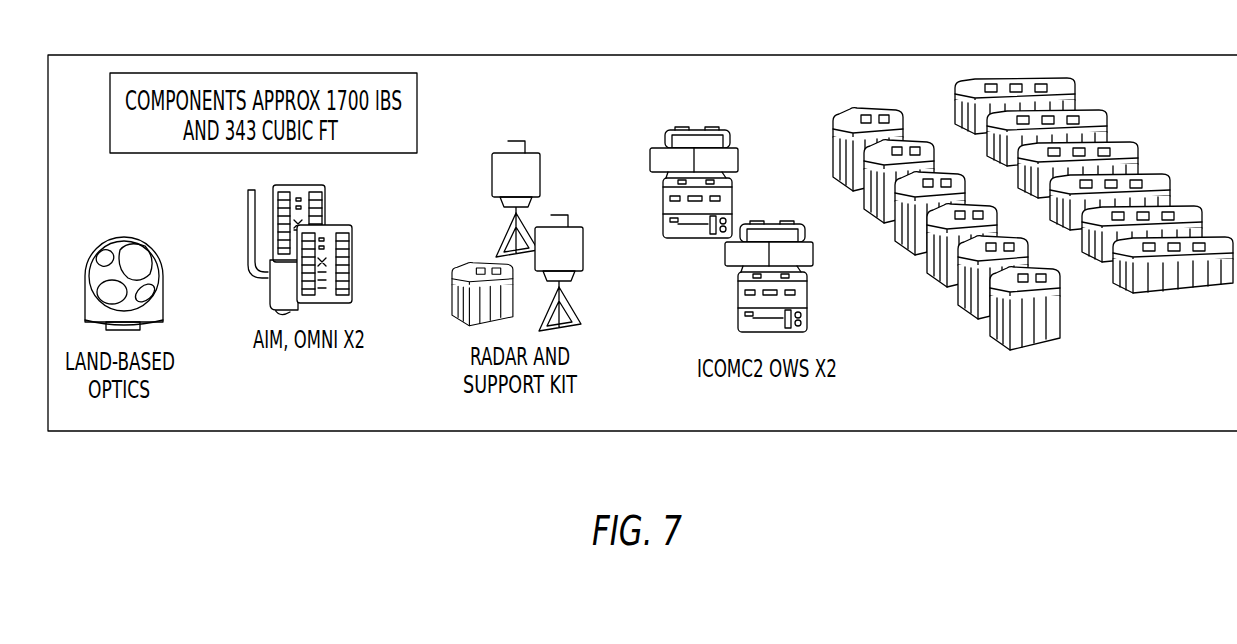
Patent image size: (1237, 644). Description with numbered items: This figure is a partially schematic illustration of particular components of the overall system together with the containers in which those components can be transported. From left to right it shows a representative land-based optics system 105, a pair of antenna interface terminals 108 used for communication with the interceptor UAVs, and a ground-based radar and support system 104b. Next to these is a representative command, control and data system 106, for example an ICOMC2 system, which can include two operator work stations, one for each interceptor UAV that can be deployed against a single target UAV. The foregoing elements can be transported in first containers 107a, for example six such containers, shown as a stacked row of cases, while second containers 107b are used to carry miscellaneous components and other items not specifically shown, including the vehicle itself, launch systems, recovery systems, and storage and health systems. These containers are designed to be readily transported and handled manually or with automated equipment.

The ground-based radar and support system 104b is at (542, 157).
The land-based optics system 105 is at (152, 237).
The command, control and data system 106 is at (727, 110).
The first containers 107a is at (890, 110).
The second containers 107b is at (1060, 80).
The antenna interface terminals 108 is at (350, 227).